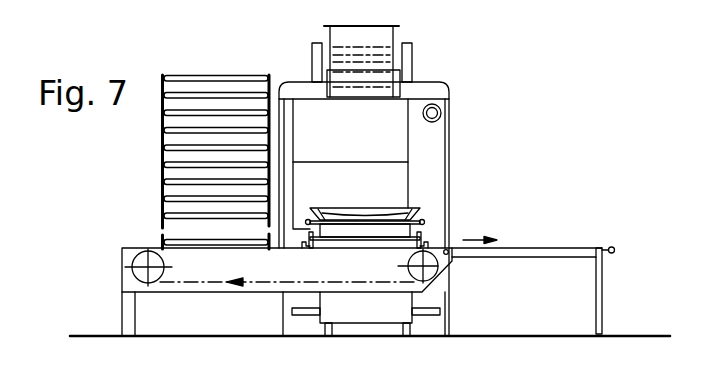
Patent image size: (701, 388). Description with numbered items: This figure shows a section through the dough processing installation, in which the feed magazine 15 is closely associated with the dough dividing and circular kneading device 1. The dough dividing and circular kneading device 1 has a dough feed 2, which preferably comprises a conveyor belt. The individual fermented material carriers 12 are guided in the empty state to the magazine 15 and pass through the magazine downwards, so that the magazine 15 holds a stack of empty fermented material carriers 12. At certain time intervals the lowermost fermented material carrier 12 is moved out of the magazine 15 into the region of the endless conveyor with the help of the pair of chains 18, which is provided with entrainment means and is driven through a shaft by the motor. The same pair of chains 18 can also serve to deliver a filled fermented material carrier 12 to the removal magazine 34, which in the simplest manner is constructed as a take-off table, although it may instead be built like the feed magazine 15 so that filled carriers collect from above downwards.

The dough dividing and circular kneading device 1 is at (440, 93).
The dough feed 2 is at (383, 87).
The fermented material carrier 12 is at (228, 75).
The feed magazine 15 is at (162, 76).
The pair of chains 18 is at (188, 283).
The removal magazine 34 is at (545, 252).